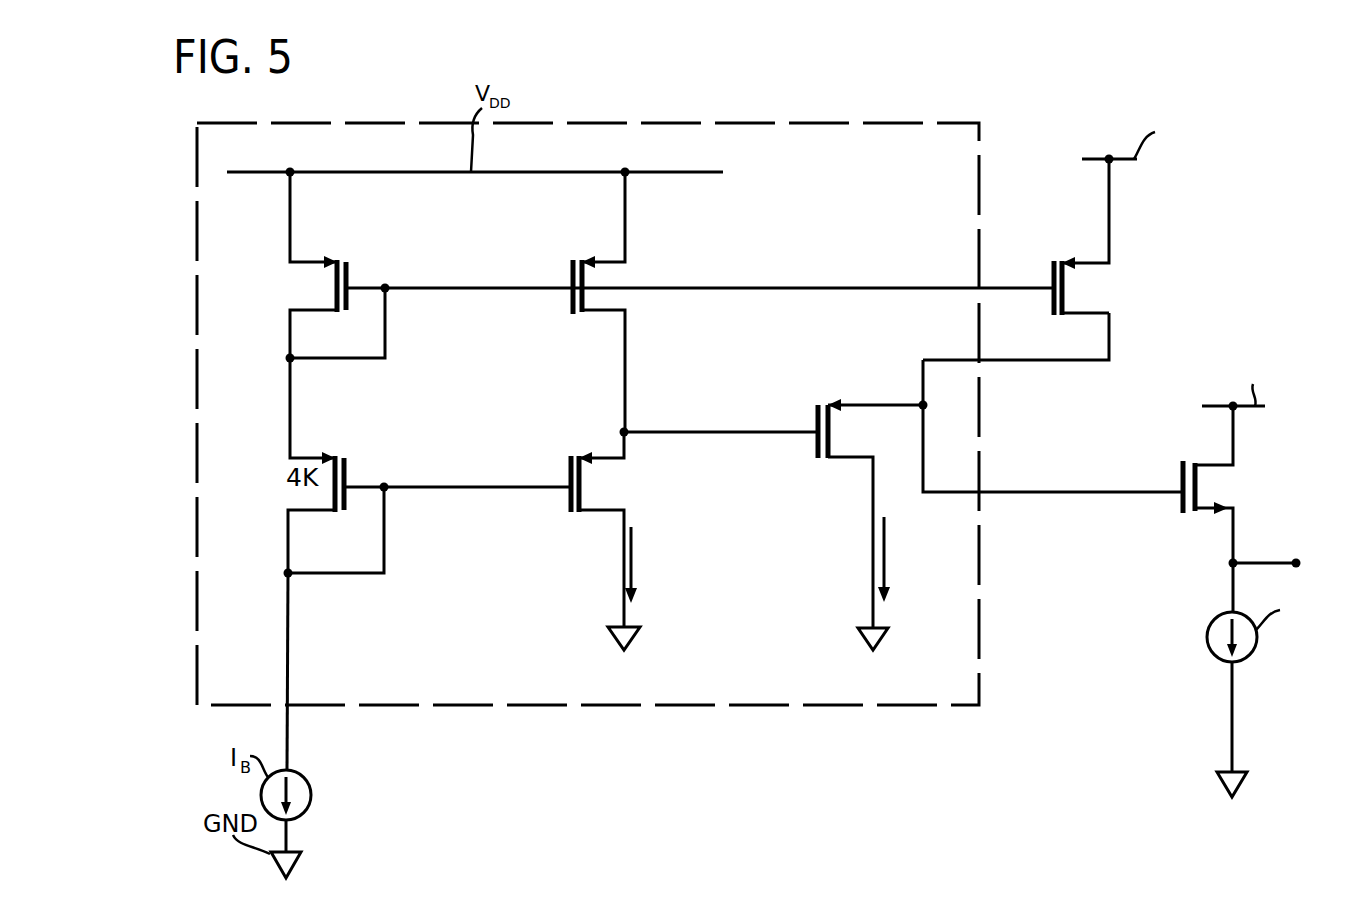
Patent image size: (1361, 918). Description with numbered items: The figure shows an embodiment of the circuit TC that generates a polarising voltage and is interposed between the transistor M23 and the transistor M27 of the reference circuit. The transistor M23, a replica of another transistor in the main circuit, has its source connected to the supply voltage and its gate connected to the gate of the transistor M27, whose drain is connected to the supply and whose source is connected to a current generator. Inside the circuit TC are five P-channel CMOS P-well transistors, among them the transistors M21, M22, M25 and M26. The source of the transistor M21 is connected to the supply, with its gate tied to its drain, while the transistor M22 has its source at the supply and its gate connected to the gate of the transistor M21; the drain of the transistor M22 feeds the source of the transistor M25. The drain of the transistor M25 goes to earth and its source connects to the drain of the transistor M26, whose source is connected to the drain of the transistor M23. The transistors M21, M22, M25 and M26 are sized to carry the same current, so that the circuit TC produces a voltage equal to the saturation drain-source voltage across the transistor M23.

The circuit for generating a polarising voltage TC is at (762, 123).
The P-channel CMOS P-well transistor M21 is at (290, 310).
The P-channel CMOS P-well transistor M22 is at (607, 307).
The first transistor M23 is at (1097, 266).
The P-channel CMOS P-well transistor M25 is at (607, 509).
The P-channel CMOS P-well transistor M26 is at (848, 458).
The transistor M27 is at (1222, 466).